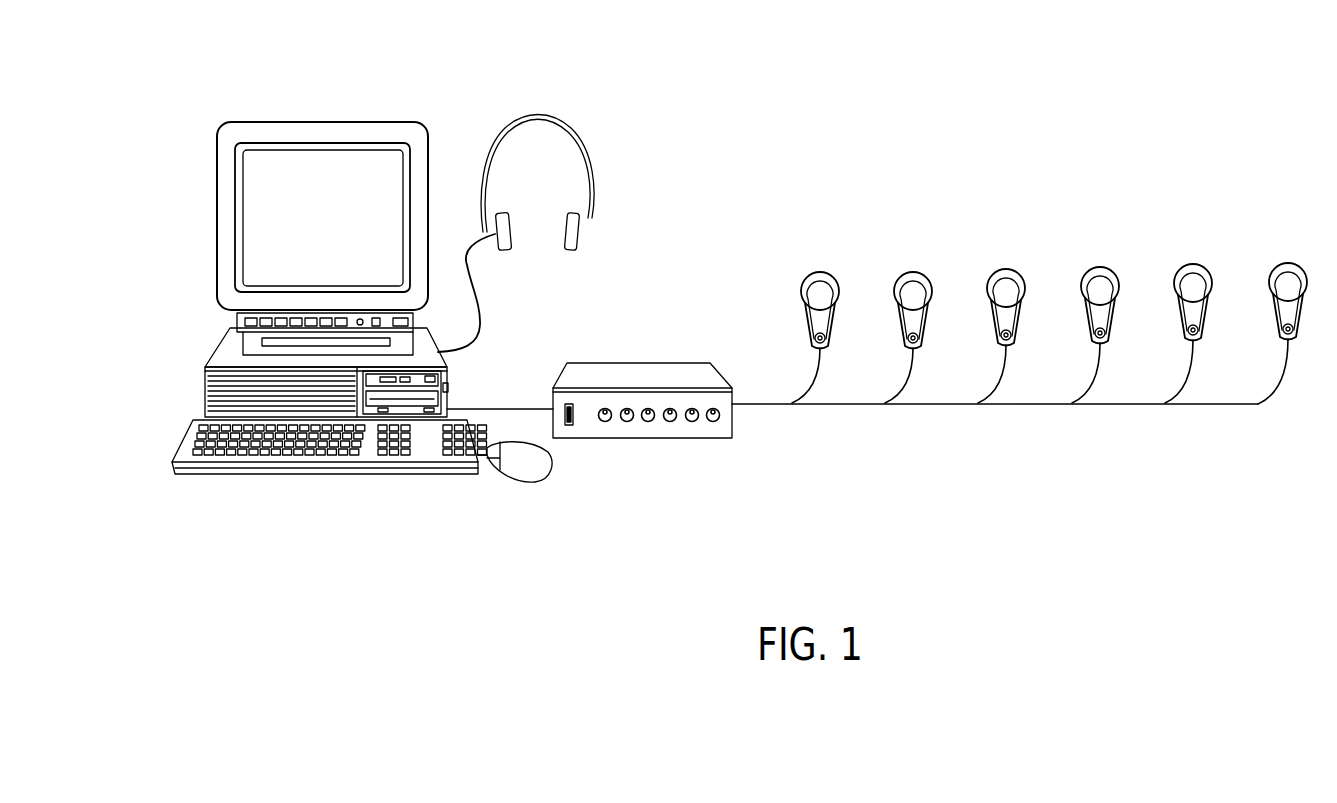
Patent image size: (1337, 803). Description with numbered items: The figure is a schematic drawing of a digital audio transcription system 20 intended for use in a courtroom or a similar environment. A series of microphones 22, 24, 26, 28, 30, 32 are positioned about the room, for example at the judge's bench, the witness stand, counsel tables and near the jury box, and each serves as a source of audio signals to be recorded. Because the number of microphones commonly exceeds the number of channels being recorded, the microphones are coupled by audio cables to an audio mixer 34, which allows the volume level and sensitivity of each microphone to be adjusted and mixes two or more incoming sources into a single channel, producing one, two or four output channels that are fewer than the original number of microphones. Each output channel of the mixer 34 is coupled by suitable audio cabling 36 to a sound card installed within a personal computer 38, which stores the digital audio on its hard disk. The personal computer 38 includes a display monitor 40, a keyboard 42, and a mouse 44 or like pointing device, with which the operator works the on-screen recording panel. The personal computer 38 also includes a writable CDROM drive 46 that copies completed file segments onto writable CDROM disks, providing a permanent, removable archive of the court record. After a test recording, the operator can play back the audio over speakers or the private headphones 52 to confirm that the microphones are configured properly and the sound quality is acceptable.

The digital audio transcription system 20 is at (1247, 129).
The microphone 22 is at (822, 270).
The microphone 24 is at (915, 270).
The microphone 26 is at (1008, 267).
The microphone 28 is at (1102, 265).
The microphone 30 is at (1196, 262).
The microphone 32 is at (1290, 261).
The audio mixer 34 is at (640, 363).
The audio cabling 36 is at (520, 407).
The personal computer 38 is at (218, 352).
The display monitor 40 is at (322, 121).
The keyboard 42 is at (342, 472).
The mouse 44 is at (528, 483).
The writable CDROM drive 46 is at (450, 388).
The private headphones 52 is at (535, 120).